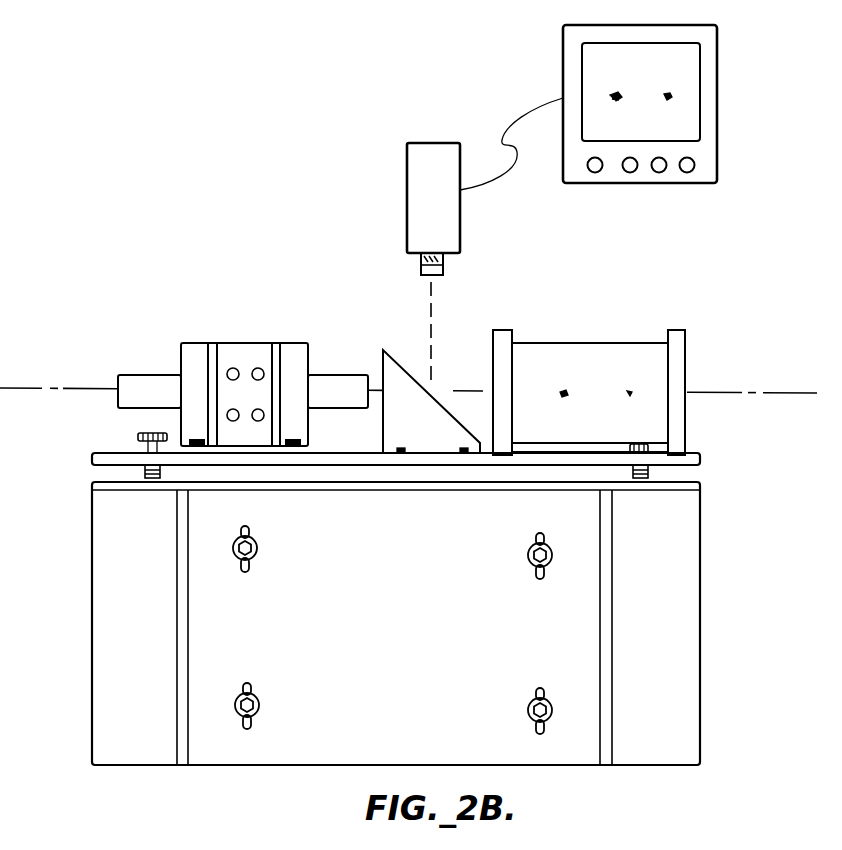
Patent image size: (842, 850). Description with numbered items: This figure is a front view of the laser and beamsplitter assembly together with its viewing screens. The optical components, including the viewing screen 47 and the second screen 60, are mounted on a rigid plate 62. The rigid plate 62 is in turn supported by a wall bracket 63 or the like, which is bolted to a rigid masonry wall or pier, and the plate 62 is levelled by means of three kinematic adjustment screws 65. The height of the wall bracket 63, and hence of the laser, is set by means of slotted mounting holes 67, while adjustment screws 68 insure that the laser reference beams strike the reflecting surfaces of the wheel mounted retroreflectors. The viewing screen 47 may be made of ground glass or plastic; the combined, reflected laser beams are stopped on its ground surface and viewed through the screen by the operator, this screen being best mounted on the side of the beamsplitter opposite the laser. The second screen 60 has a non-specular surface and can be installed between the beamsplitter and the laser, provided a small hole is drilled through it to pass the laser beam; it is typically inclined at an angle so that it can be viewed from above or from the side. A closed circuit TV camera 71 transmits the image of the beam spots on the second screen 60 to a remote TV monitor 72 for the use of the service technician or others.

The remote TV monitor 72 is at (717, 98).
The closed circuit TV camera 71 is at (460, 232).
The second screen 60 is at (394, 353).
The viewing screen 47 is at (597, 360).
The kinematic adjustment screws 65 is at (140, 434).
The rigid plate 62 is at (105, 453).
The wall bracket 63 is at (98, 585).
The adjustment screws 68 is at (258, 546).
The slotted mounting holes 67 is at (252, 568).